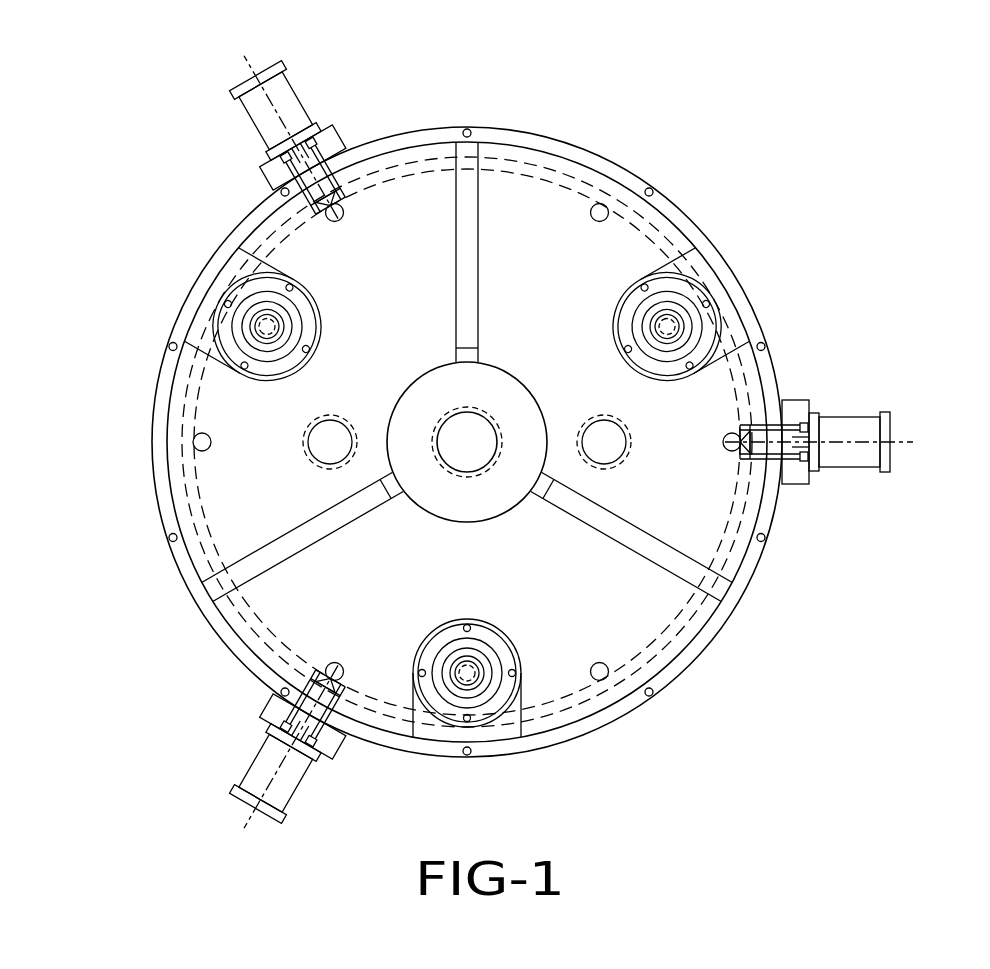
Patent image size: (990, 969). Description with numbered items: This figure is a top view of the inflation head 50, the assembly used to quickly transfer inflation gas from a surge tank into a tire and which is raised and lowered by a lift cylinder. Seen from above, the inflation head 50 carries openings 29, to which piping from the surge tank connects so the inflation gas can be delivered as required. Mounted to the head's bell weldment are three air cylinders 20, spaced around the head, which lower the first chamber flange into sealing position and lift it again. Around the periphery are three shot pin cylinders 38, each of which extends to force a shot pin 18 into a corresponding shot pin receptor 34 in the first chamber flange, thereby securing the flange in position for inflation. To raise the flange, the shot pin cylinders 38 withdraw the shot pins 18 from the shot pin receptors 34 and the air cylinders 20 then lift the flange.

The inflation head 50 is at (712, 176).
The air cylinder 20 is at (237, 357).
The opening 29 is at (325, 443).
The shot pin 18 is at (320, 190).
The shot pin receptor 34 is at (275, 152).
The shot pin cylinder 38 is at (279, 80).